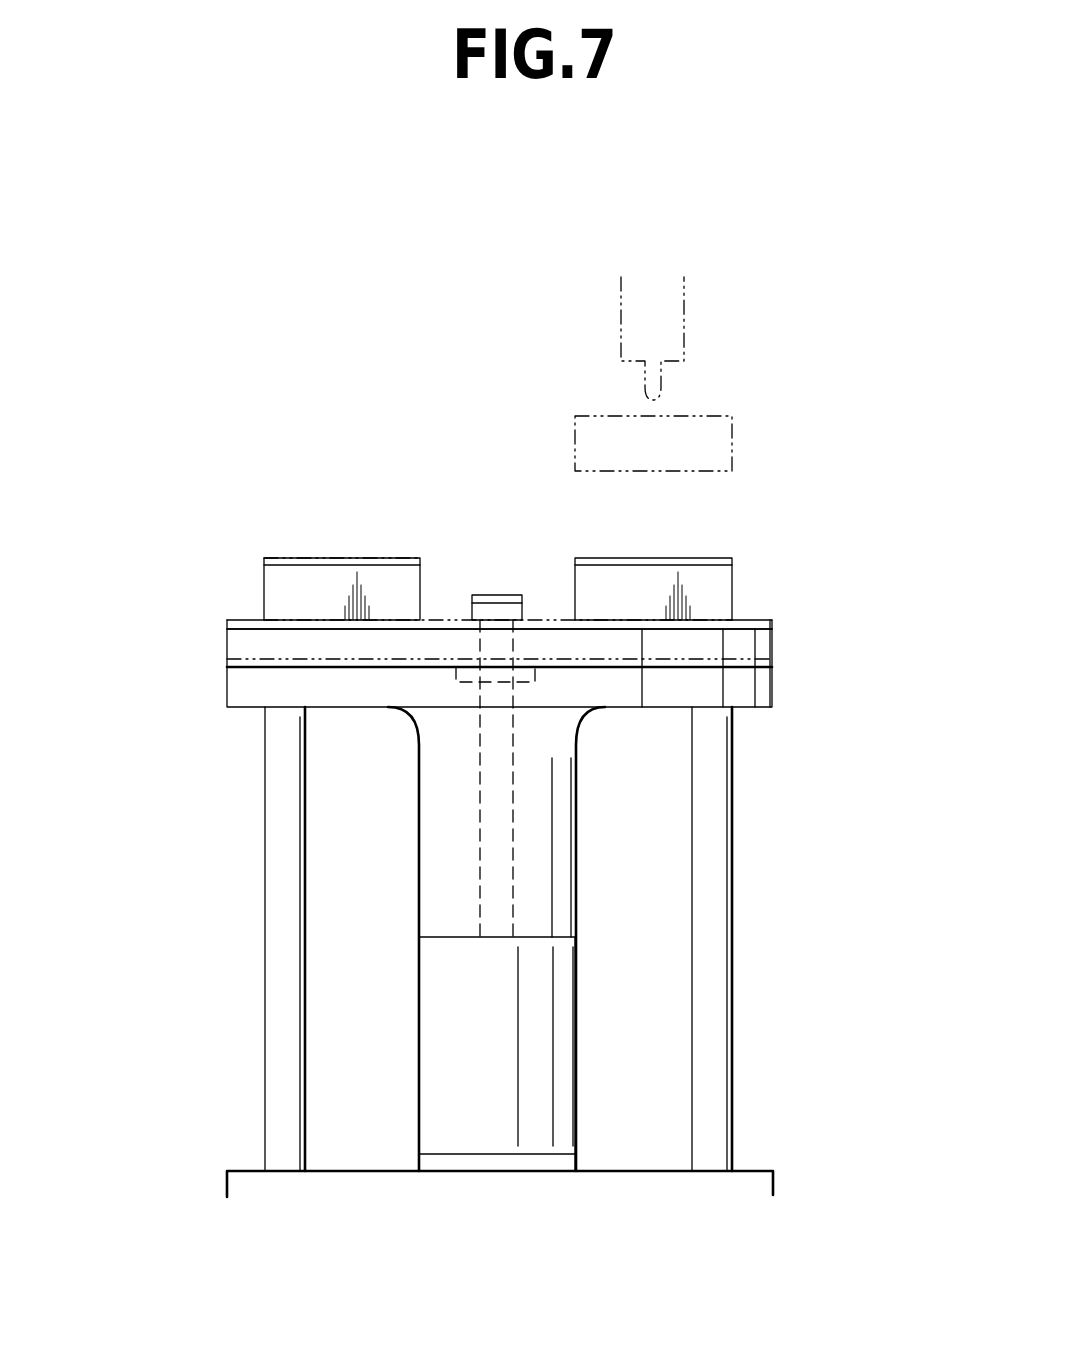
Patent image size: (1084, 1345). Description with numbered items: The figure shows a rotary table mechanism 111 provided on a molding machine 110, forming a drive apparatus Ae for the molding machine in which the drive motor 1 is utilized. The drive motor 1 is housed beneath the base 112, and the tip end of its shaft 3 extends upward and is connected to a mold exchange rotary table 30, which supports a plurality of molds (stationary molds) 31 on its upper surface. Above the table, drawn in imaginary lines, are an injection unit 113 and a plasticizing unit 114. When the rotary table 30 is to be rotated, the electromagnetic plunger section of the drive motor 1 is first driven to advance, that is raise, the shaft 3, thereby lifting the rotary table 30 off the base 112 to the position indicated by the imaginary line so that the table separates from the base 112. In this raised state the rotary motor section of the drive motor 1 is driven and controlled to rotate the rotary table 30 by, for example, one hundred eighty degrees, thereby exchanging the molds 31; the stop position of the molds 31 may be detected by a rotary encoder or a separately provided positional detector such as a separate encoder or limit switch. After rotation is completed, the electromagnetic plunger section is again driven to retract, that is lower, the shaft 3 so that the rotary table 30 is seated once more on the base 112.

The molding machine 110 is at (358, 268).
The rotary table mechanism 111 is at (768, 525).
The base 112 is at (227, 685).
The injection unit 113 is at (684, 298).
The plasticizing unit 114 is at (732, 425).
The mold exchange rotary table 30 is at (240, 620).
The molds (stationary molds) 31 is at (264, 590).
The shaft 3 is at (513, 909).
The drive motor 1 is at (578, 968).
The drive apparatus Ae is at (580, 1038).